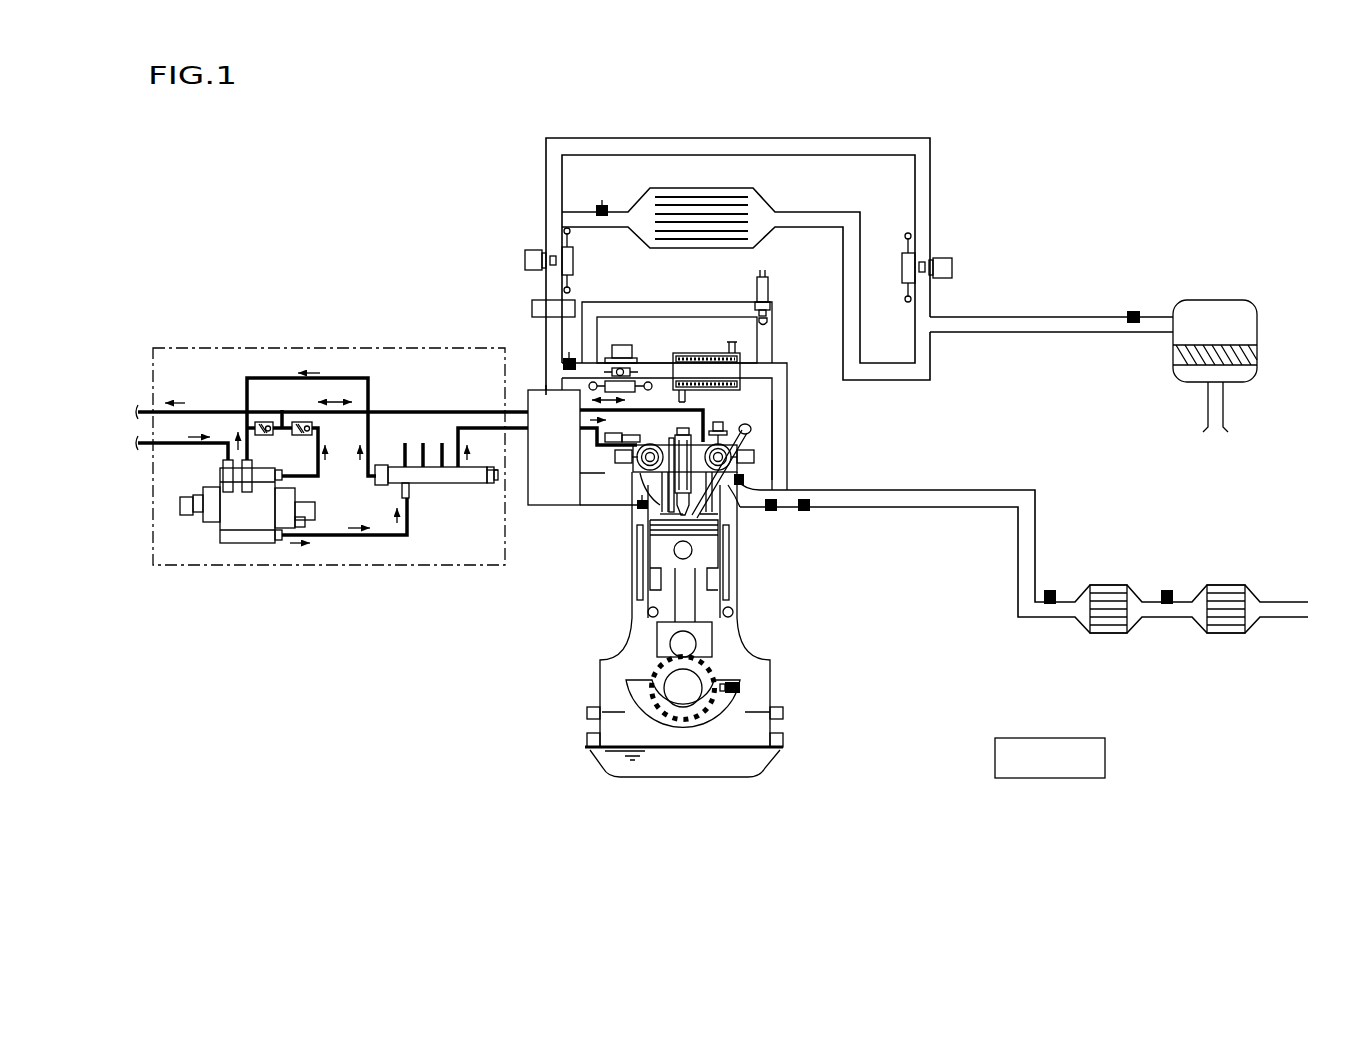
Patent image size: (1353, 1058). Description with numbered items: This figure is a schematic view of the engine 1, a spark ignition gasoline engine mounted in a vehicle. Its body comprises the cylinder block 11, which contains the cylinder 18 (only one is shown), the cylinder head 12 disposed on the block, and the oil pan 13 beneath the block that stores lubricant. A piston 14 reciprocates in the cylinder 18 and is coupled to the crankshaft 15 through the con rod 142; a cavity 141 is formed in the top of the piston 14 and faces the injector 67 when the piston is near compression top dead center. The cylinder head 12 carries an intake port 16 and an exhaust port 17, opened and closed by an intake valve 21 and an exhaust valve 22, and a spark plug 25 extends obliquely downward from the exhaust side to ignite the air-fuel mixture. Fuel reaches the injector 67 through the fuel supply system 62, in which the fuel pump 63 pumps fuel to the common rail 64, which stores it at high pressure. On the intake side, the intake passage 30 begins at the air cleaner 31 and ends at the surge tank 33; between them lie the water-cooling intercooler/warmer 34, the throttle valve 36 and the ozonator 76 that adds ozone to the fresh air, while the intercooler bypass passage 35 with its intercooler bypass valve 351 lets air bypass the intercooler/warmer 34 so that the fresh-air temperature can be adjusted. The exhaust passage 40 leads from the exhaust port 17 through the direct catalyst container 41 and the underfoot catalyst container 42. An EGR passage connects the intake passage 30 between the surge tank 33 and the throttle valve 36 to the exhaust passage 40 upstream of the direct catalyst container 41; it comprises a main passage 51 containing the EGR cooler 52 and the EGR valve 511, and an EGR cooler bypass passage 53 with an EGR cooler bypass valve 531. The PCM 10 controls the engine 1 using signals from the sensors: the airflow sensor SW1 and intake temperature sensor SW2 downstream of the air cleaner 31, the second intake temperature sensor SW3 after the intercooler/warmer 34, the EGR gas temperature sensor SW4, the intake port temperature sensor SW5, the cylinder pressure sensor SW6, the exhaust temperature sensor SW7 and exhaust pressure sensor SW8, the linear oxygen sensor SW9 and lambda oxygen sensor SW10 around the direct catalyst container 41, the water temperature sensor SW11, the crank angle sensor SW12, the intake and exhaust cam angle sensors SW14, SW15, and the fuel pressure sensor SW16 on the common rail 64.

The engine 1 is at (1047, 146).
The PCM 10 is at (1106, 757).
The cylinder block 11 is at (740, 613).
The cylinder head 12 is at (748, 508).
The oil pan 13 is at (765, 768).
The piston 14 is at (652, 588).
The cavity 141 is at (735, 610).
The con rod 142 is at (660, 640).
The crankshaft 15 is at (683, 707).
The intake port 16 is at (636, 501).
The exhaust port 17 is at (757, 507).
The cylinder 18 is at (651, 617).
The intake valve 21 is at (655, 576).
The exhaust valve 22 is at (713, 533).
The spark plug 25 is at (750, 431).
The intake passage 30 is at (546, 288).
The air cleaner 31 is at (1236, 300).
The surge tank 33 is at (567, 448).
The intercooler/warmer 34 is at (725, 188).
The intercooler bypass passage 35 is at (885, 140).
The intercooler bypass valve 351 is at (945, 258).
The throttle valve 36 is at (532, 250).
The exhaust passage 40 is at (957, 489).
The direct catalyst container 41 is at (1110, 583).
The underfoot catalyst container 42 is at (1226, 583).
The main passage 51 is at (760, 378).
The EGR valve 511 is at (620, 345).
The EGR cooler 52 is at (710, 353).
The EGR cooler bypass passage 53 is at (668, 302).
The EGR cooler bypass valve 531 is at (770, 288).
The fuel supply system 62 is at (253, 347).
The fuel pump 63 is at (240, 543).
The common rail 64 is at (428, 483).
The injector 67 is at (683, 432).
The ozonator 76 is at (532, 310).
The airflow sensor SW1 is at (1133, 311).
The intake temperature sensor SW2 is at (1133, 317).
The second intake temperature sensor SW3 is at (602, 203).
The EGR gas temperature sensor SW4 is at (568, 356).
The intake port temperature sensor SW5 is at (640, 506).
The cylinder pressure sensor SW6 is at (674, 432).
The exhaust temperature sensor SW7 is at (774, 508).
The exhaust pressure sensor SW8 is at (806, 508).
The linear O2 sensor SW9 is at (1052, 590).
The lambda O2 sensor SW10 is at (1167, 590).
The water temperature sensor SW11 is at (744, 479).
The crank angle sensor SW12 is at (740, 688).
The intake cam angle sensor SW14 is at (617, 458).
The exhaust cam angle sensor SW15 is at (754, 457).
The fuel pressure sensor SW16 is at (492, 483).